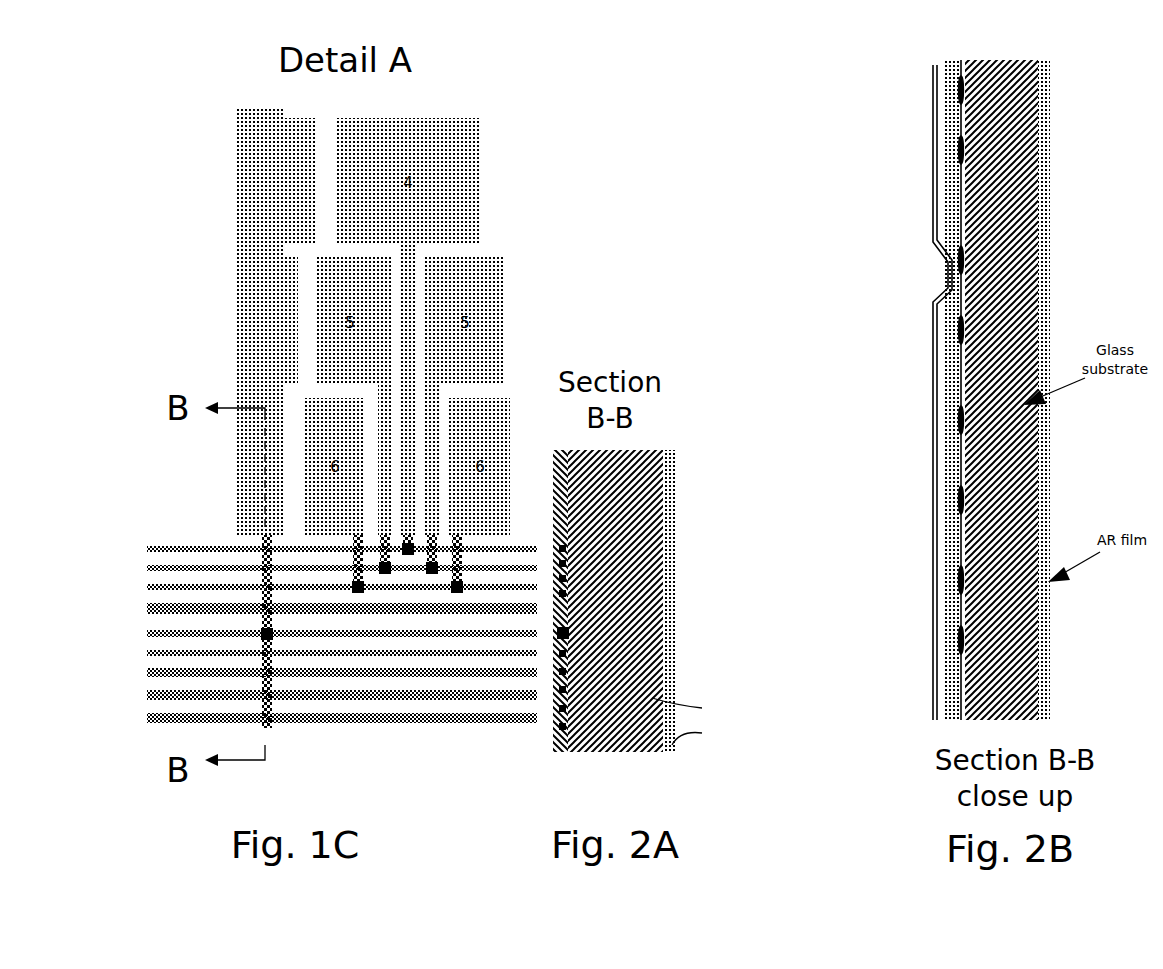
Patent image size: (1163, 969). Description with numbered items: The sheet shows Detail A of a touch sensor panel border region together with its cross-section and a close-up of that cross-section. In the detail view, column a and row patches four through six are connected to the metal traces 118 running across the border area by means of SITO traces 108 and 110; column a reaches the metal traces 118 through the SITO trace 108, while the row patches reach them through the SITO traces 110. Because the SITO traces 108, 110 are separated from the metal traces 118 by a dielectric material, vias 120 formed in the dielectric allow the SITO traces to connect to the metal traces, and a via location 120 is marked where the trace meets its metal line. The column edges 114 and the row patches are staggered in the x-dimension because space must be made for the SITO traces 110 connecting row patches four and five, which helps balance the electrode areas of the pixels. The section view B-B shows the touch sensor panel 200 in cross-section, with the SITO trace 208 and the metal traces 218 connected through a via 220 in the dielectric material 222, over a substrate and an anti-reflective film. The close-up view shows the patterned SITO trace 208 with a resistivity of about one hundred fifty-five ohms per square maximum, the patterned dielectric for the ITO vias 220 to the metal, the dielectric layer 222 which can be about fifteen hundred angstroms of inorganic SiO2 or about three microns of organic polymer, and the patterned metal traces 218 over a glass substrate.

In FIG. 1C, the SITO trace 108 is at (262, 557).
In FIG. 1C, the SITO traces 110 is at (458, 566).
In FIG. 1C, the column edges 114 is at (314, 200).
In FIG. 1C, the metal traces 118 is at (176, 540).
In FIG. 1C, the vias 120 is at (285, 650).
In FIG. 2A, the touch sensor panel 200 is at (664, 573).
In FIG. 1C, the SITO trace 208 is at (553, 468).
In FIG. 2B, the SITO trace 208 is at (920, 154).
In FIG. 2A, the metal traces 218 is at (565, 585).
In FIG. 2B, the metal traces 218 is at (936, 425).
In FIG. 2A, the via 220 is at (563, 633).
In FIG. 2B, the via 220 is at (922, 258).
In FIG. 2A, the dielectric material 222 is at (575, 540).
In FIG. 2B, the dielectric material 222 is at (932, 308).